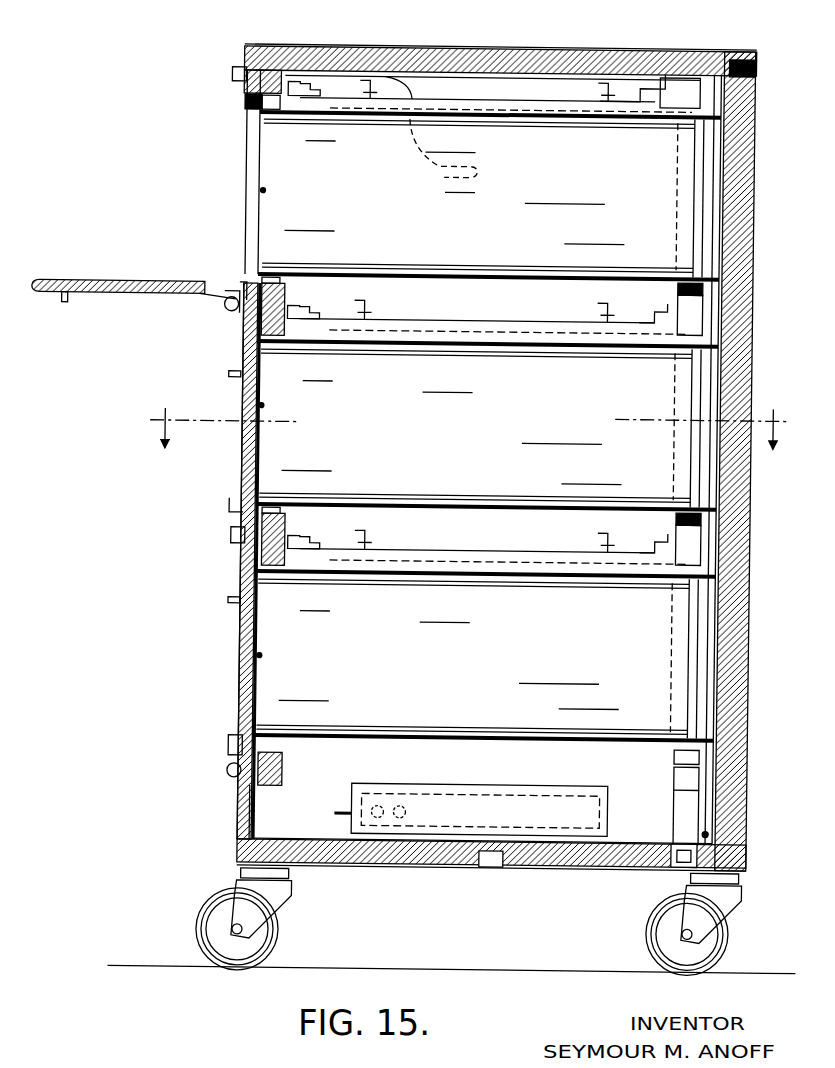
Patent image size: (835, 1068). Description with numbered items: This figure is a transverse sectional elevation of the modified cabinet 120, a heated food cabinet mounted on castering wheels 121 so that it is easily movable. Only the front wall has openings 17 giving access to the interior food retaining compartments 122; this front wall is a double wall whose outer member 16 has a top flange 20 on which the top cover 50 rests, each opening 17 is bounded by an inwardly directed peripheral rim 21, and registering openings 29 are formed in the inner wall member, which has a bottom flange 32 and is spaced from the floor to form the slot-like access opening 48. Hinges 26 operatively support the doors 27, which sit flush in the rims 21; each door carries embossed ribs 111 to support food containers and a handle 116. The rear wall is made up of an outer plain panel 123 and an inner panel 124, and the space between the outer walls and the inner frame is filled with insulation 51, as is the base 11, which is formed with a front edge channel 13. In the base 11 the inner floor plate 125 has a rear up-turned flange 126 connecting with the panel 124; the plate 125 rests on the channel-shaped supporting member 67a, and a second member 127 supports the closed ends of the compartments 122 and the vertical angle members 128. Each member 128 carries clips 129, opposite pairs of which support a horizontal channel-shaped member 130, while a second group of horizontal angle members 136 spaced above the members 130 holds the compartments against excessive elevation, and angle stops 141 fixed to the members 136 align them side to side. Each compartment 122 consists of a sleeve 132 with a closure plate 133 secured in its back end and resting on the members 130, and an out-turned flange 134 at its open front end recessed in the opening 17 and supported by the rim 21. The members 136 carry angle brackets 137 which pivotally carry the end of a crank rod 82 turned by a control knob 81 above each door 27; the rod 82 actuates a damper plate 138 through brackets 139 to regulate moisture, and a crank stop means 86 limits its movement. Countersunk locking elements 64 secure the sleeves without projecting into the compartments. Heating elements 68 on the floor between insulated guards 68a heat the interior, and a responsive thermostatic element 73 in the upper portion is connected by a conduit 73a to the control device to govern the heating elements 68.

The base 11 is at (395, 875).
The front edge channel 13 is at (240, 852).
The outer member 16 is at (242, 548).
The opening 17 is at (246, 160).
The top flange 20 is at (272, 50).
The peripheral rim 21 is at (247, 278).
The hinges 26 is at (222, 302).
The doors 27 is at (135, 310).
The openings 29 is at (295, 118).
The bottom flange 32 is at (284, 780).
The access opening 48 is at (240, 808).
The top cover 50 is at (550, 47).
The insulation 51 is at (468, 55).
The locking elements 64 is at (267, 190).
The supporting member 67a is at (495, 866).
The heating elements 68 is at (545, 800).
The insulated guards 68a is at (462, 790).
The thermostatic element 73 is at (460, 165).
The conduit 73a is at (398, 80).
The control knobs 81 is at (232, 75).
The crank rod 82 is at (513, 98).
The crank stop means 86 is at (305, 90).
The embossed ribs 111 is at (120, 280).
The handles 116 is at (65, 302).
The modified cabinet 120 is at (414, 491).
The castering wheels 121 is at (282, 945).
The food retaining compartments 122 is at (486, 210).
The outer plain panel 123 is at (752, 330).
The inner panel 124 is at (752, 242).
The inner floor plate 125 is at (312, 838).
The rear up-turned flange 126 is at (712, 828).
The second member 127 is at (675, 866).
The vertical angle members 128 is at (676, 808).
The clips 129 is at (676, 305).
The horizontal channel-shaped member 130 is at (676, 280).
The sleeve 132 is at (426, 265).
The closure plate 133 is at (700, 180).
The out-turned flange 134 is at (245, 105).
The horizontal angle members 136 is at (720, 110).
The angle brackets 137 is at (695, 72).
The damper plate 138 is at (405, 325).
The brackets 139 is at (360, 310).
The angle stops 141 is at (675, 138).